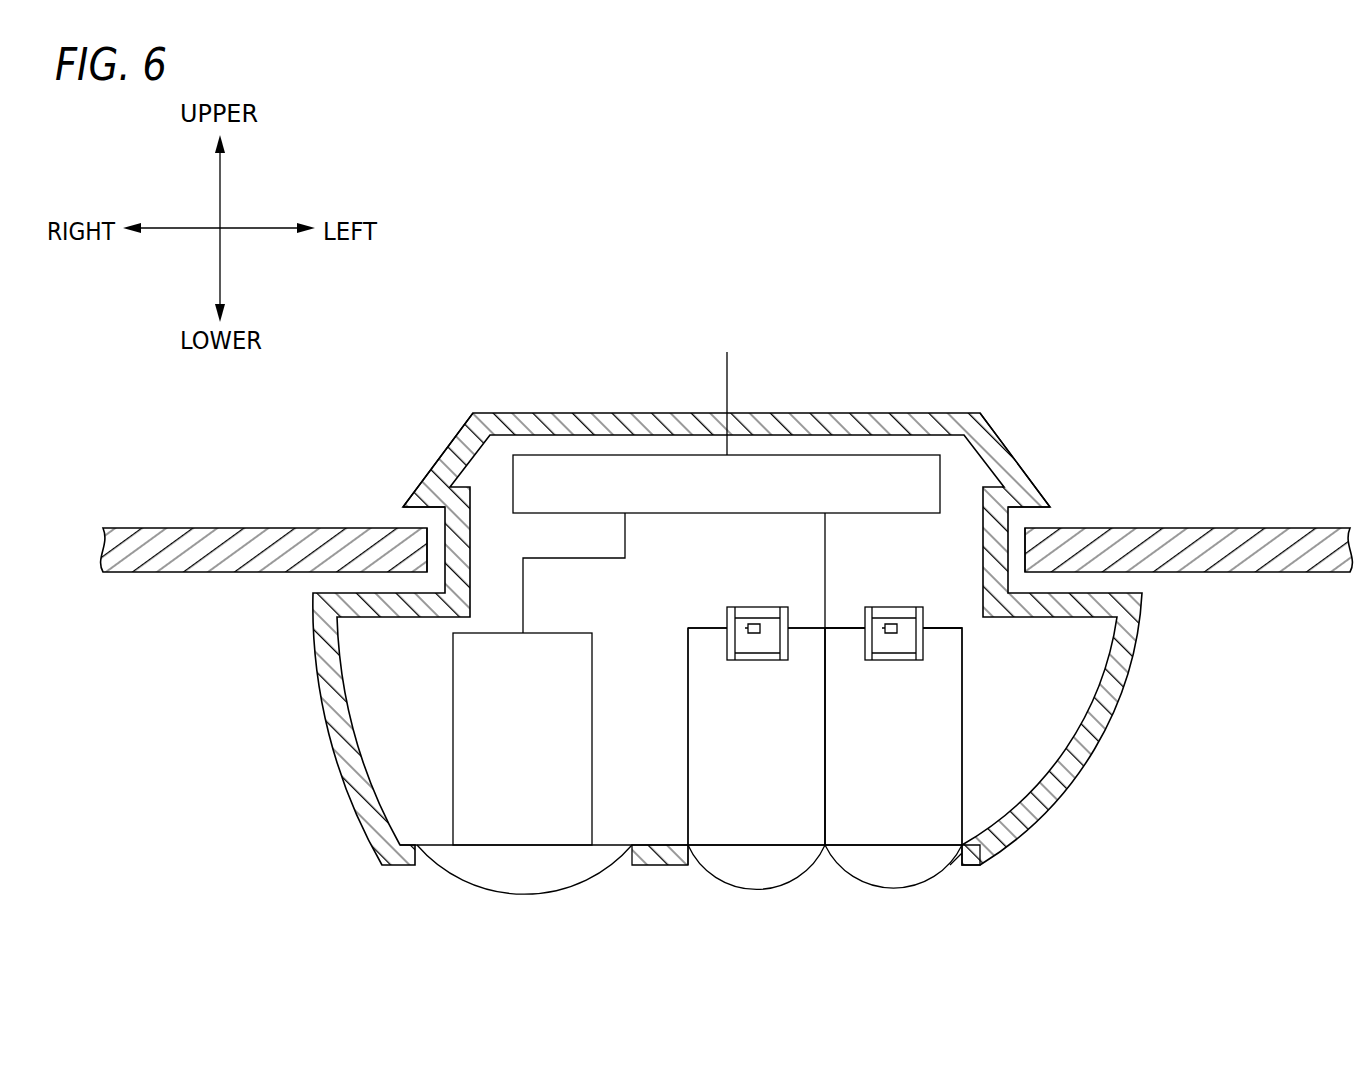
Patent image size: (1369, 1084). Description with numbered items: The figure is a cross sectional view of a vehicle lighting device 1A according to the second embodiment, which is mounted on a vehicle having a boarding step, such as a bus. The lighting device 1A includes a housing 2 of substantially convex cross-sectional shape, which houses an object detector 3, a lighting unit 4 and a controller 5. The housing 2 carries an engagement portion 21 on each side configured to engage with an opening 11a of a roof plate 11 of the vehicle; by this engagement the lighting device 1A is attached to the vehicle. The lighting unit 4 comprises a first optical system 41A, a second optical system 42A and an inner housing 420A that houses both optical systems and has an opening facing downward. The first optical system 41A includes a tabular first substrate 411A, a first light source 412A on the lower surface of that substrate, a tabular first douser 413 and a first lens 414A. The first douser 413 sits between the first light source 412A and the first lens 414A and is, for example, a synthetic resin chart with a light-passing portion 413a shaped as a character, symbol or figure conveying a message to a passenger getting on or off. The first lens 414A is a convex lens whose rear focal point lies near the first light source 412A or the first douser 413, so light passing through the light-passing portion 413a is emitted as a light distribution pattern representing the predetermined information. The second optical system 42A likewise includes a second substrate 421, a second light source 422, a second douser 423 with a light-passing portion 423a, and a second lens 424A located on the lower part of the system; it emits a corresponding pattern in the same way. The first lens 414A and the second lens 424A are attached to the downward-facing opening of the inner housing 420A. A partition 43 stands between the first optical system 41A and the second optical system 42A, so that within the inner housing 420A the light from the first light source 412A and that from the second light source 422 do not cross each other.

The lighting device 1A is at (852, 338).
The housing 2 is at (1105, 737).
The engagement portion 21 is at (405, 503).
The object detector 3 is at (485, 710).
The lighting unit 4 is at (678, 685).
The controller 5 is at (640, 453).
The roof plate 11 is at (175, 575).
The opening 11a is at (435, 558).
The first optical system 41A is at (688, 735).
The first substrate 411A is at (762, 625).
The first light source 412A is at (740, 632).
The first douser 413 is at (768, 662).
The light-passing portion 413a is at (740, 662).
The first lens 414A is at (752, 878).
The second optical system 42A is at (963, 683).
The inner housing 420A is at (963, 643).
The second substrate 421 is at (905, 625).
The second light source 422 is at (868, 630).
The second douser 423 is at (900, 662).
The light-passing portion 423a is at (878, 662).
The second lens 424A is at (887, 877).
The partition 43 is at (827, 797).